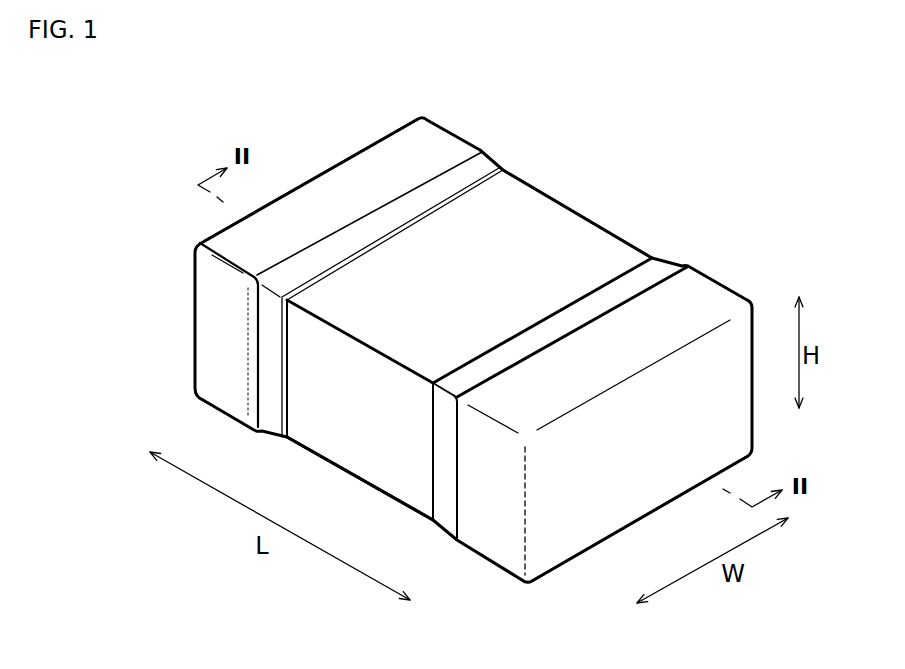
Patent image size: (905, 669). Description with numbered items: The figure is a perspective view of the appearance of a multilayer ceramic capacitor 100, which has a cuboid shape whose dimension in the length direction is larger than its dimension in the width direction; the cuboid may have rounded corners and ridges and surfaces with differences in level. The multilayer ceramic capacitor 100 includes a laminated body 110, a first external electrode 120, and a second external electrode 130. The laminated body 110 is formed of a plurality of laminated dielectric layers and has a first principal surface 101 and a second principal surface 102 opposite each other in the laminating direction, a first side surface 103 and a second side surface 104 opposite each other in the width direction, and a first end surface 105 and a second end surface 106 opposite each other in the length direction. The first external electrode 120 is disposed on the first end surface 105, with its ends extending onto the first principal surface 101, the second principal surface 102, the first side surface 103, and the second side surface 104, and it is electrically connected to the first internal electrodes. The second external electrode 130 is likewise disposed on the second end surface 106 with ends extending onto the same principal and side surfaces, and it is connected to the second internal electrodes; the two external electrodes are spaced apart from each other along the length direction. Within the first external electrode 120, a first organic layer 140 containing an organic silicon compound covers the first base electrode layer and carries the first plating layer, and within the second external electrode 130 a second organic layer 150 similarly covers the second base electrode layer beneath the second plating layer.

The multilayer ceramic capacitor 100 is at (528, 125).
The first principal surface 101 is at (550, 223).
The second principal surface 102 is at (393, 495).
The first side surface 103 is at (602, 228).
The second side surface 104 is at (357, 458).
The first end surface 105 is at (335, 190).
The second end surface 106 is at (585, 512).
The laminated body 110 is at (305, 448).
The first external electrode 120 is at (208, 238).
The second external electrode 130 is at (715, 433).
The first organic layer 140 is at (270, 384).
The second organic layer 150 is at (447, 518).